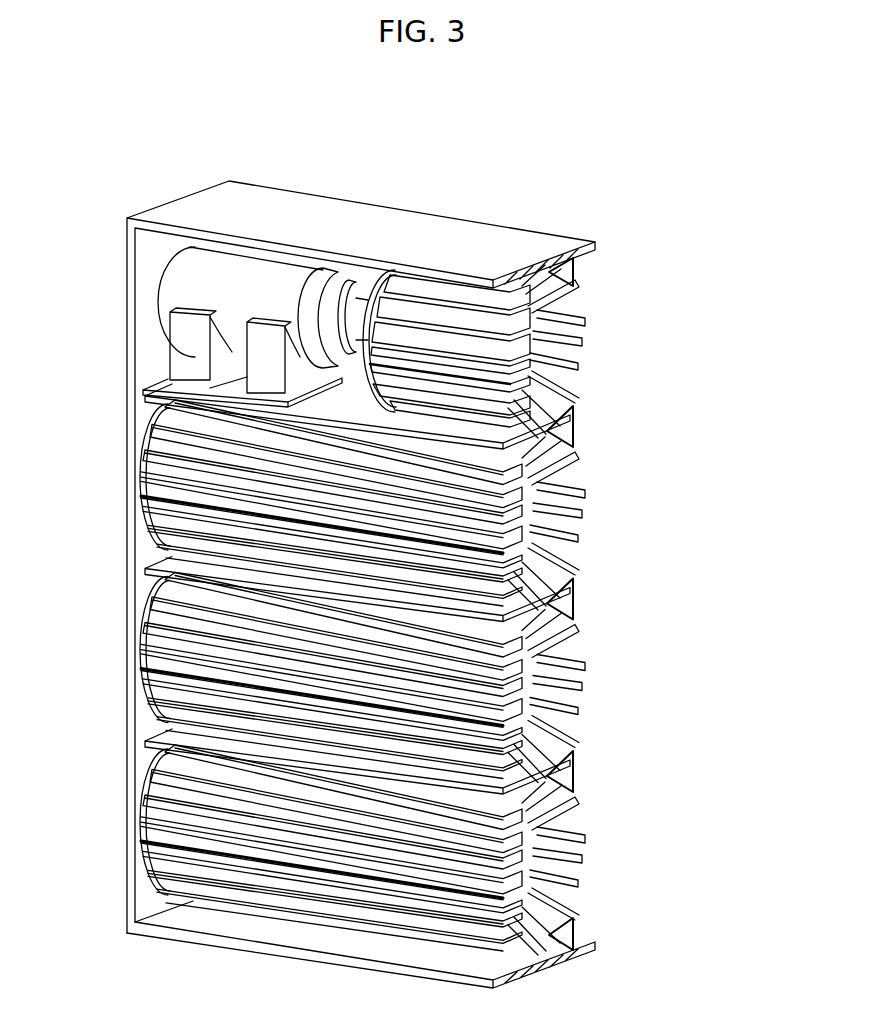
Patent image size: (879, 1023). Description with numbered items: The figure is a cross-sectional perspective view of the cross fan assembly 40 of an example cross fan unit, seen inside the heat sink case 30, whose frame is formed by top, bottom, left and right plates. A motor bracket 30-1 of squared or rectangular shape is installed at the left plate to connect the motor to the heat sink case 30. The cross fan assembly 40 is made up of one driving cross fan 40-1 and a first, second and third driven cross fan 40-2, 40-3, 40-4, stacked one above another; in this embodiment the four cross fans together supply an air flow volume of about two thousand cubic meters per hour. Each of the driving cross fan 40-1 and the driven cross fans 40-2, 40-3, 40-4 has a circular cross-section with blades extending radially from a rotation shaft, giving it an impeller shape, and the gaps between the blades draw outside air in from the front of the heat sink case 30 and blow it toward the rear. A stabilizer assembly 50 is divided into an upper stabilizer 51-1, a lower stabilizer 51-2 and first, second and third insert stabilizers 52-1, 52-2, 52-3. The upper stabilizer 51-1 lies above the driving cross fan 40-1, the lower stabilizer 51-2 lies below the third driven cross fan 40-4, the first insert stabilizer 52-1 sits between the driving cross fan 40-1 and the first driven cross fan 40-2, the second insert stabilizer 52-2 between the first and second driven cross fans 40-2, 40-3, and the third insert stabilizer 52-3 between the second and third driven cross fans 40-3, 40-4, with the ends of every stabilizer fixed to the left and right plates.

The heat sink case 30 is at (188, 194).
The motor bracket 30-1 is at (163, 358).
The cross fan assembly 40 is at (478, 610).
The driving cross fan 40-1 is at (578, 337).
The first driven cross fan 40-2 is at (578, 506).
The second driven cross fan 40-3 is at (578, 684).
The third driven cross fan 40-4 is at (578, 857).
The stabilizer assembly 50 is at (197, 285).
The upper stabilizer 51-1 is at (578, 262).
The lower stabilizer 51-2 is at (578, 938).
The first insert stabilizer 52-1 is at (578, 424).
The second insert stabilizer 52-2 is at (578, 598).
The third insert stabilizer 52-3 is at (578, 770).